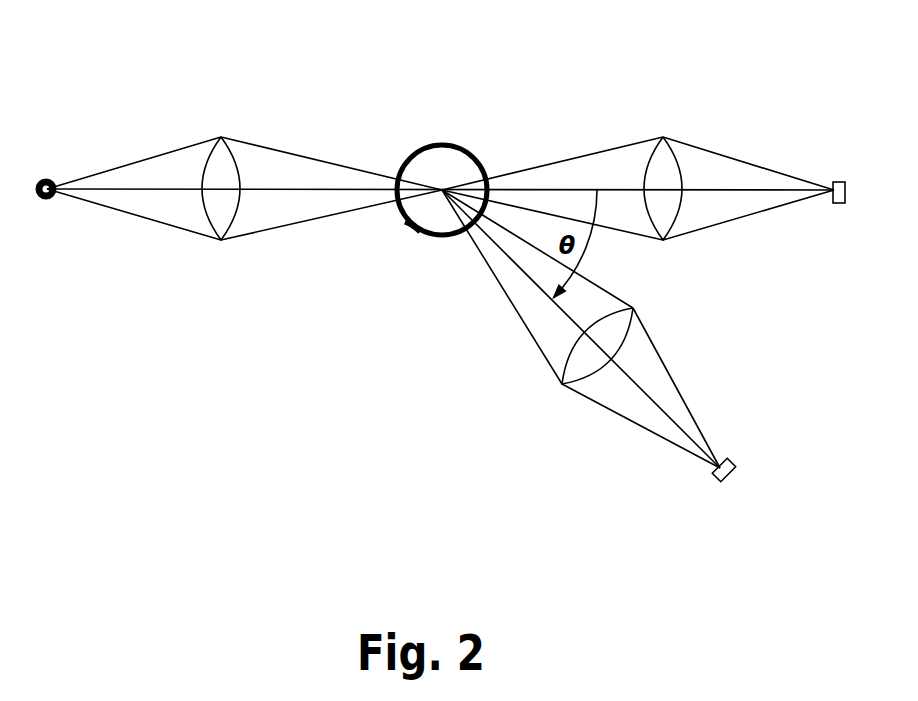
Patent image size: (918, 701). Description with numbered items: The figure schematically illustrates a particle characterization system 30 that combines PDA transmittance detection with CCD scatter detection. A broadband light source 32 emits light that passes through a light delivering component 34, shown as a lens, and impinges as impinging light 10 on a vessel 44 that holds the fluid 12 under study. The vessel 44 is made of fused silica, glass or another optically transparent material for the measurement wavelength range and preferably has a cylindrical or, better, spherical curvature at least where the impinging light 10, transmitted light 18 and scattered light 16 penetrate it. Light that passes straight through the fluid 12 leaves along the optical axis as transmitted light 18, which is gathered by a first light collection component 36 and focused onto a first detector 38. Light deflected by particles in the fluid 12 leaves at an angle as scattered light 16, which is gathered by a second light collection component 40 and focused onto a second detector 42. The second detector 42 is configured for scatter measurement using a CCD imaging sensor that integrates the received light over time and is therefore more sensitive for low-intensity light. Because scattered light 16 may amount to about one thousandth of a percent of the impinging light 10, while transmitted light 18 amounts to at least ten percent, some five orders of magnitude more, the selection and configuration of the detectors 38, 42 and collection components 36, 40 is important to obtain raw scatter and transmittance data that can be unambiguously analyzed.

The impinging light 10 is at (298, 153).
The fluid 12 is at (442, 165).
The scattered light 16 is at (513, 308).
The transmitted light 18 is at (602, 150).
The particle characterization system 30 is at (315, 483).
The broadband light source 32 is at (47, 203).
The light delivering component 34 is at (218, 158).
The first light collection component 36 is at (668, 163).
The first detector 38 is at (828, 178).
The second light collection component 40 is at (618, 330).
The second detector 42 is at (717, 476).
The vessel 44 is at (413, 230).